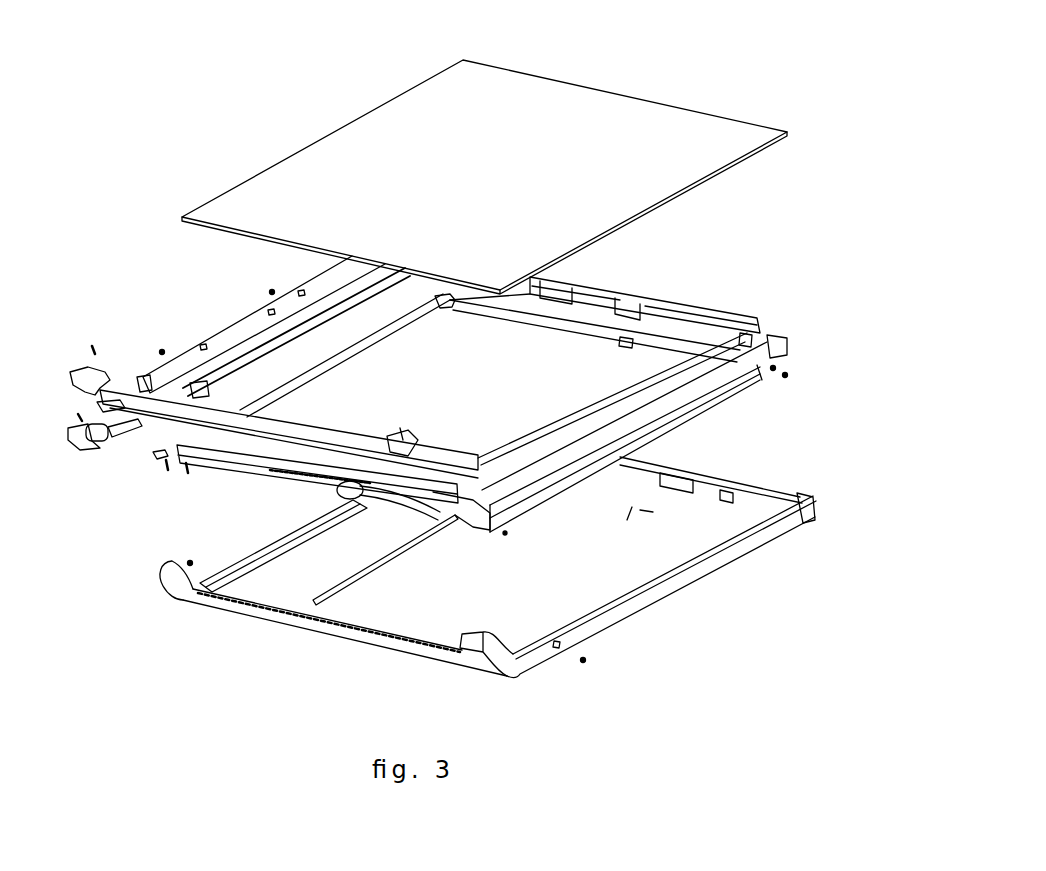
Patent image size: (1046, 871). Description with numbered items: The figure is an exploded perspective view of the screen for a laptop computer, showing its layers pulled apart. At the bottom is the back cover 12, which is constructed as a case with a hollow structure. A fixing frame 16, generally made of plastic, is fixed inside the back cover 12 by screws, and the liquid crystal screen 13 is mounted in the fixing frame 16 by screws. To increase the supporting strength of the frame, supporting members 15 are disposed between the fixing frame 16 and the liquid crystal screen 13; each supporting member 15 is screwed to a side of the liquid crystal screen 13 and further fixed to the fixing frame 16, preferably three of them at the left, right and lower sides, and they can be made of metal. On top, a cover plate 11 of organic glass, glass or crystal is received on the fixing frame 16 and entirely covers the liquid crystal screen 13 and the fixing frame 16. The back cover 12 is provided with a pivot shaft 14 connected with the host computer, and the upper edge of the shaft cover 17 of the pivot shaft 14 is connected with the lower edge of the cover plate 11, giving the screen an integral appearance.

The cover plate 11 is at (657, 132).
The back cover 12 is at (645, 592).
The liquid crystal screen 13 is at (520, 500).
The pivot shaft 14 is at (105, 447).
The supporting member 15 is at (233, 330).
The fixing frame 16 is at (713, 320).
The shaft cover 17 is at (117, 388).